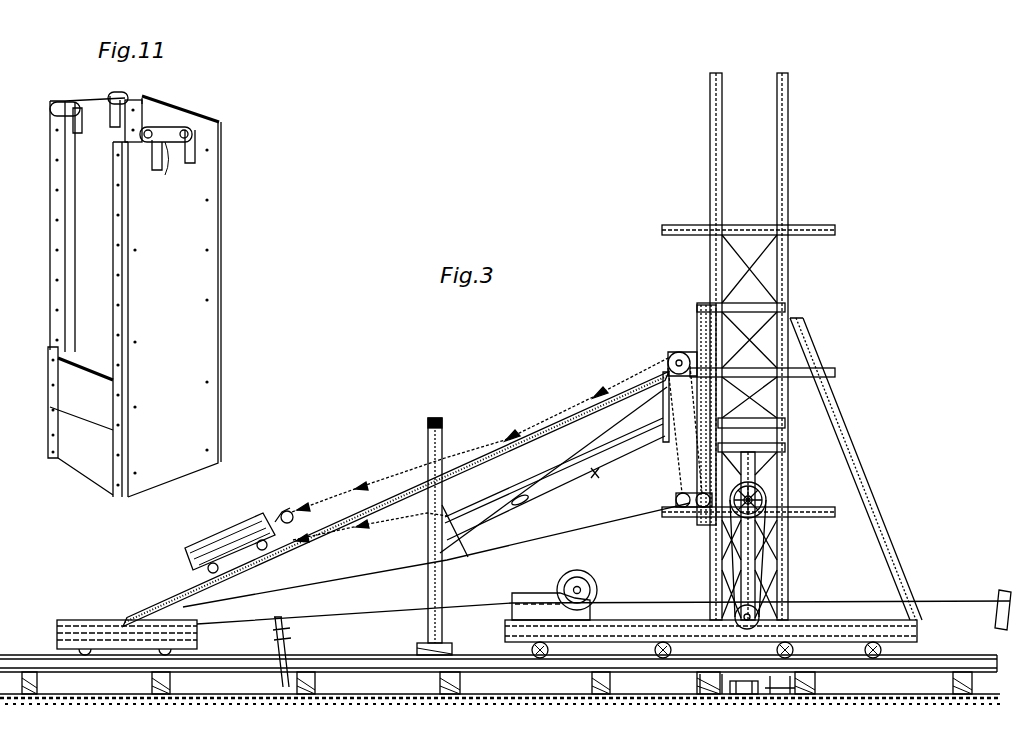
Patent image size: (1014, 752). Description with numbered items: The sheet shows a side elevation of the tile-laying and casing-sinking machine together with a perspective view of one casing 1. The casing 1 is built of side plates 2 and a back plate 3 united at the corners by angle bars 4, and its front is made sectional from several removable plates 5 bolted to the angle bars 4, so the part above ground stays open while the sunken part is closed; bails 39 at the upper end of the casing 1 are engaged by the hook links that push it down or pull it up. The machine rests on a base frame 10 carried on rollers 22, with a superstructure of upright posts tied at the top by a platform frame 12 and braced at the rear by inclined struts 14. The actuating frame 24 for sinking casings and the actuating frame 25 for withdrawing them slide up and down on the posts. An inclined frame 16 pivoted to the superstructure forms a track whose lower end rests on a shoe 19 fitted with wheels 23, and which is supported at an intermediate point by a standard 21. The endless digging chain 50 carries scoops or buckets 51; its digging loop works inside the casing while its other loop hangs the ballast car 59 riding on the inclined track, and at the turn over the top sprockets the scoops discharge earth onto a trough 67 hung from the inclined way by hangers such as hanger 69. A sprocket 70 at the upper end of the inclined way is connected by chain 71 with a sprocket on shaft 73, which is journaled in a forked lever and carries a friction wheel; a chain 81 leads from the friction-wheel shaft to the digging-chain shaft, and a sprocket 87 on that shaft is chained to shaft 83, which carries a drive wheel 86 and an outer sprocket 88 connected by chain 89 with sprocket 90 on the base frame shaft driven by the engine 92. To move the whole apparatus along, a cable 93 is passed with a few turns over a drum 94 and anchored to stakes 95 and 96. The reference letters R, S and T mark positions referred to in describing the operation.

In FIG. 11, the casing 1 is at (212, 118).
In FIG. 3, the casing 1 is at (697, 318).
In FIG. 11, the side plates 2 is at (135, 297).
In FIG. 11, the back plate 3 is at (175, 108).
In FIG. 11, the angle bars 4 is at (142, 102).
In FIG. 11, the plates 5 is at (80, 421).
In FIG. 11, the bails 39 is at (72, 105).
In FIG. 3, the base frame 10 is at (607, 622).
In FIG. 3, the platform frame 12 is at (832, 238).
In FIG. 3, the inclined struts 14 is at (866, 500).
In FIG. 3, the inclined frame 16 is at (328, 525).
In FIG. 3, the shoe 19 is at (97, 619).
In FIG. 3, the standard 21 is at (427, 541).
In FIG. 3, the rollers 22 is at (548, 650).
In FIG. 3, the wheels 23 is at (60, 650).
In FIG. 3, the actuating frame 24 is at (709, 194).
In FIG. 3, the actuating frame 25 is at (789, 193).
In FIG. 3, the endless digging chain 50 is at (393, 477).
In FIG. 3, the scoops or buckets 51 is at (361, 483).
In FIG. 3, the tension weight car 59 is at (220, 540).
In FIG. 3, the trough 67 is at (556, 488).
In FIG. 3, the hanger 69 is at (460, 508).
In FIG. 3, the sprocket 70 is at (679, 352).
In FIG. 3, the chain 71 is at (712, 462).
In FIG. 3, the shaft 73 is at (728, 506).
In FIG. 3, the chain 81 is at (678, 500).
In FIG. 3, the shaft 83 is at (762, 492).
In FIG. 3, the drive wheel 86 is at (700, 506).
In FIG. 3, the sprocket 87 is at (695, 506).
In FIG. 3, the sprocket 88 is at (780, 506).
In FIG. 3, the chain 89 is at (758, 571).
In FIG. 3, the sprocket 90 is at (760, 604).
In FIG. 3, the engine 92 is at (533, 593).
In FIG. 3, the cable 93 is at (468, 607).
In FIG. 3, the drum 94 is at (578, 586).
In FIG. 3, the stake 95 is at (283, 618).
In FIG. 3, the stake 96 is at (1003, 594).
In FIG. 3, the reference letter T is at (705, 690).
In FIG. 3, the reference letter S is at (748, 696).
In FIG. 3, the reference letter R is at (797, 696).